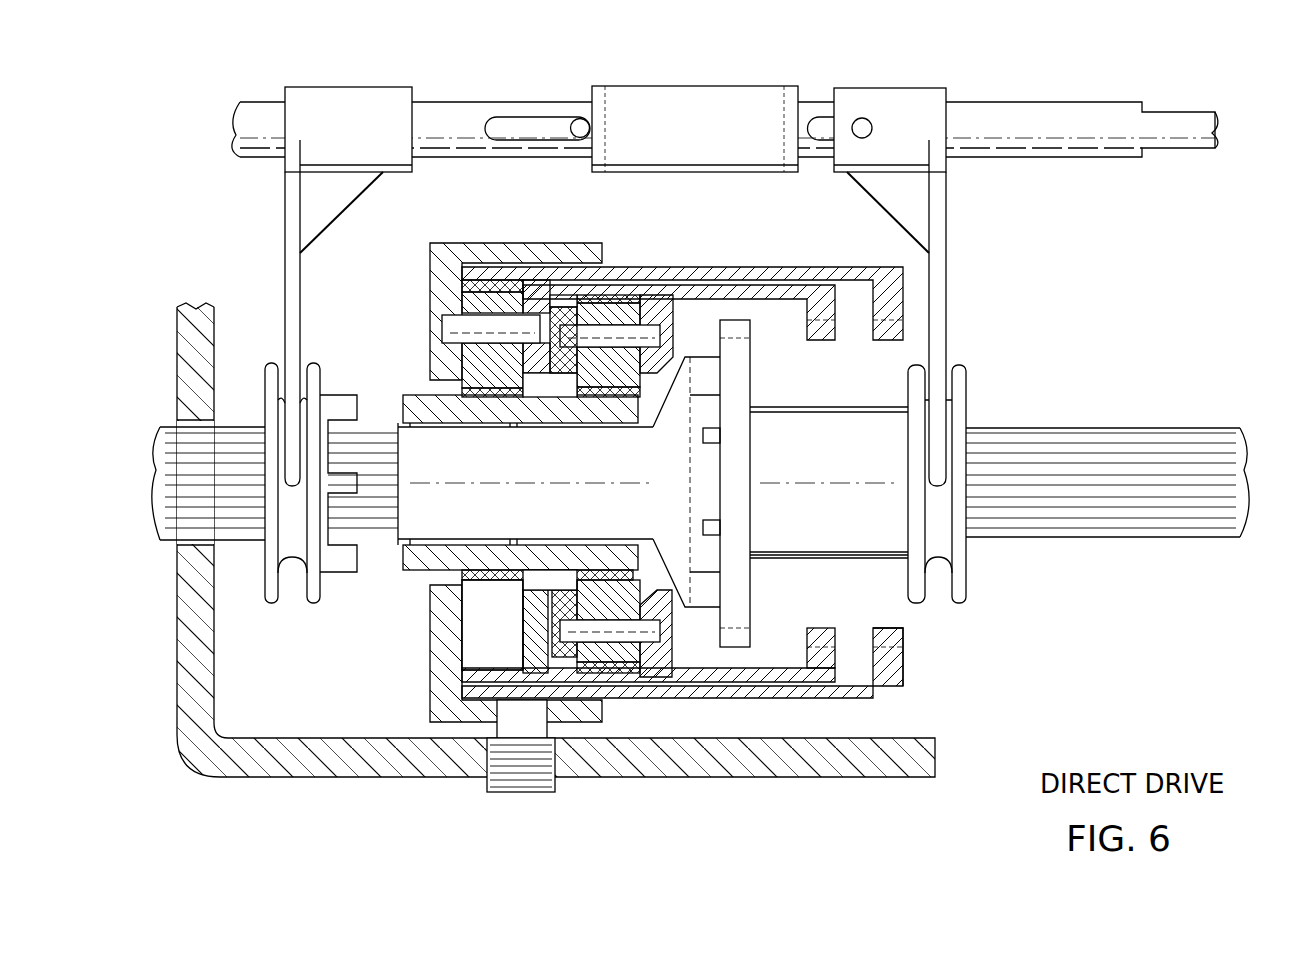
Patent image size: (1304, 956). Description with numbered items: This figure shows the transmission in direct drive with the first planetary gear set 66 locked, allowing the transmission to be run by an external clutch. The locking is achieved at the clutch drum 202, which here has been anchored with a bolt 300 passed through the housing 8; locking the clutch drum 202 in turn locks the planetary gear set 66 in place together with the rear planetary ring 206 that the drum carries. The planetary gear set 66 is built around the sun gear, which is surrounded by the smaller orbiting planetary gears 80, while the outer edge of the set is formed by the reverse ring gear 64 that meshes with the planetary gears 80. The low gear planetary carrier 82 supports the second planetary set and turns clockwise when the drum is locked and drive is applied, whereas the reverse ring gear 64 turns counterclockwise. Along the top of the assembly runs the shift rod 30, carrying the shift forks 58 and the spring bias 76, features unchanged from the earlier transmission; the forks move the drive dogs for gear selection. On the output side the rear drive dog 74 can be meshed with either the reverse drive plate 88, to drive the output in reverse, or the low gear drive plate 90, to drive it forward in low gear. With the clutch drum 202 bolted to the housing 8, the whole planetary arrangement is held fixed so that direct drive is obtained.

The housing 8 is at (222, 757).
The shift rod 30 is at (1020, 115).
The shift forks 58 is at (355, 105).
The spring bias 76 is at (653, 90).
The reverse ring gear 64 is at (812, 272).
The low gear planetary carrier 82 is at (700, 295).
The clutch drum 202 is at (440, 280).
The rear planetary ring 206 is at (542, 293).
The first planetary gear set 66 is at (472, 598).
The rear drive dog 74 is at (883, 457).
The planetary gears 80 is at (620, 653).
The reverse drive plate 88 is at (890, 668).
The low gear drive plate 90 is at (822, 653).
The bolt 300 is at (500, 792).